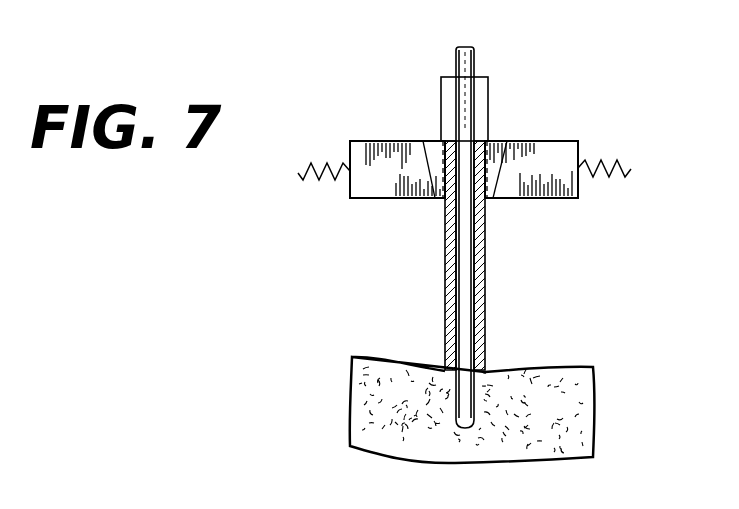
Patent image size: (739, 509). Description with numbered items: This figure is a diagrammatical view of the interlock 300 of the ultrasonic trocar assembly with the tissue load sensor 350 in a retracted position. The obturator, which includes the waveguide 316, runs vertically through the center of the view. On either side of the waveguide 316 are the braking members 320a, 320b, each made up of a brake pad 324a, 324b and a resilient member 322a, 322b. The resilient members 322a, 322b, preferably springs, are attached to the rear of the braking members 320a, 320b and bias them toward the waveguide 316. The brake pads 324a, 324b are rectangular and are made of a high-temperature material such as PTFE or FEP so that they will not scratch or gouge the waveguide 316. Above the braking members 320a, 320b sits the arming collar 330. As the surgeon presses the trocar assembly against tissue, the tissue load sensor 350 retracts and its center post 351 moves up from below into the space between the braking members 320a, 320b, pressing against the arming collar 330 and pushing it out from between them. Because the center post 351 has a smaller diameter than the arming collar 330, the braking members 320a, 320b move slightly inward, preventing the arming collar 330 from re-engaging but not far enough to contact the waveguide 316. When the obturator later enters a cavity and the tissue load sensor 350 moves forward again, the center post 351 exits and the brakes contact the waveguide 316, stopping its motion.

The interlock 300 is at (380, 103).
The waveguide 316 is at (470, 258).
The braking member 320a is at (346, 140).
The braking member 320b is at (582, 201).
The resilient member 322a is at (320, 174).
The resilient member 322b is at (612, 165).
The brake pad 324a is at (366, 193).
The brake pad 324b is at (544, 140).
The arming collar 330 is at (482, 80).
The tissue load sensor 350 is at (490, 324).
The center post 351 is at (446, 174).